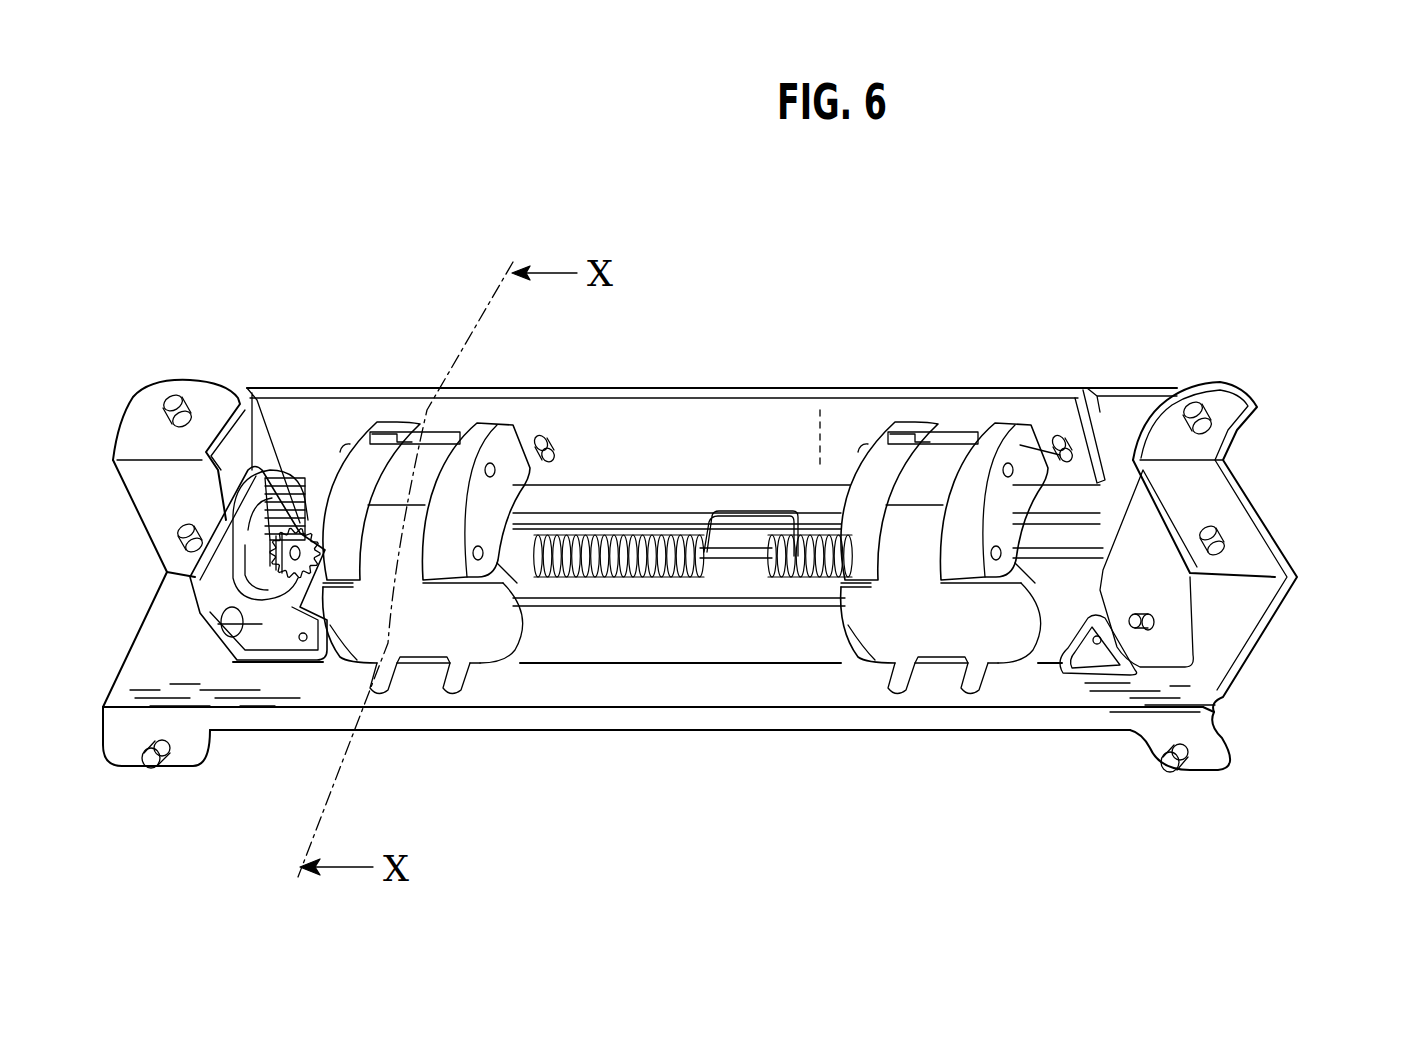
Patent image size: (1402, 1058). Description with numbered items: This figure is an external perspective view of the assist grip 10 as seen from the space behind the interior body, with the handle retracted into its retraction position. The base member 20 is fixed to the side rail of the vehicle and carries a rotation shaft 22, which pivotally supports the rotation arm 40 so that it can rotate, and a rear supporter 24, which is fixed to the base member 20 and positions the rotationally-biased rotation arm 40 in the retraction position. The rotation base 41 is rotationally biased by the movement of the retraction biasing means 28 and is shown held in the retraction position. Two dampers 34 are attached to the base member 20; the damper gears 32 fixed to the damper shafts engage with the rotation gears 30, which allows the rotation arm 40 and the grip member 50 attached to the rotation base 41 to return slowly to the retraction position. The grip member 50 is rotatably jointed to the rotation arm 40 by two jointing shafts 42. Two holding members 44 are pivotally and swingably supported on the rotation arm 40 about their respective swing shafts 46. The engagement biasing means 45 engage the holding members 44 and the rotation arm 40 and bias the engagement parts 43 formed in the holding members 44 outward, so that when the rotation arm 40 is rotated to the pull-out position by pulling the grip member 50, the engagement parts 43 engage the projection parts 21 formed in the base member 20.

The assist grip 10 is at (1260, 316).
The base member 20 is at (1207, 652).
The projection part 21 is at (438, 660).
The rotation shaft 22 is at (733, 540).
The rear supporter 24 is at (1137, 403).
The retraction biasing means 28 is at (768, 492).
The rotation gear 30 is at (312, 472).
The damper gear 32 is at (262, 520).
The damper 34 is at (215, 517).
The rotation arm 40 is at (663, 425).
The rotation base 41 is at (1107, 407).
The jointing shaft 42 is at (487, 567).
The engagement part 43 is at (426, 422).
The holding member 44 is at (452, 425).
The engagement biasing means 45 is at (392, 430).
The swing shaft 46 is at (497, 458).
The grip member 50 is at (360, 630).